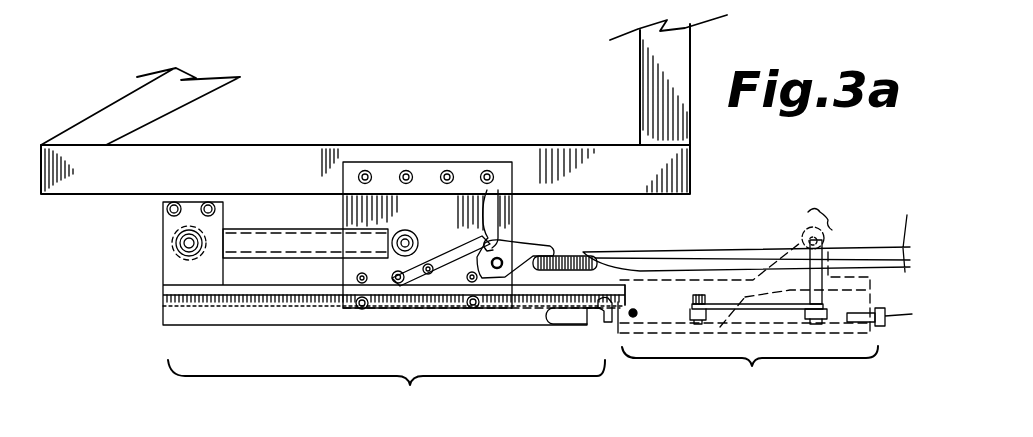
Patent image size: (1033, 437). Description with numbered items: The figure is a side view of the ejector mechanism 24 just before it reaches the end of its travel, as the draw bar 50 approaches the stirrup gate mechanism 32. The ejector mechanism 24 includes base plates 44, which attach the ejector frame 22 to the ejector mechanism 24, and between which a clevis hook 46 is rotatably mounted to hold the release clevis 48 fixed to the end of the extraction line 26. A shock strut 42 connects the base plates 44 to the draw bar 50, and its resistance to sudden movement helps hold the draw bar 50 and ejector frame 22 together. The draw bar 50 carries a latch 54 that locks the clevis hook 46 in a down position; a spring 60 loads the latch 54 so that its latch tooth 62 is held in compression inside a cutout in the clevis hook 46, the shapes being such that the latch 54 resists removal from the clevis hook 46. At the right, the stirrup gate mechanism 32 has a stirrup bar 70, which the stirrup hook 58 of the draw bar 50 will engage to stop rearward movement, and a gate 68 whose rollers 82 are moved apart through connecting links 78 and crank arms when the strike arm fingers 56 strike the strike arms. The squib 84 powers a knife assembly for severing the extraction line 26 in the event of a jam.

The ejector frame 22 is at (690, 158).
The ejector mechanism 24 is at (386, 387).
The extraction line 26 is at (848, 248).
The stirrup gate mechanism 32 is at (748, 321).
The shock strut 42 is at (307, 228).
The base plates 44 is at (512, 199).
The clevis hook 46 is at (524, 243).
The release clevis 48 is at (575, 255).
The draw bar 50 is at (230, 325).
The latch 54 is at (432, 258).
The strike arm fingers 56 is at (612, 322).
The stirrup hook 58 is at (587, 324).
The spring 60 is at (398, 271).
The latch tooth 62 is at (490, 200).
The gate 68 is at (830, 211).
The stirrup bar 70 is at (640, 313).
The connecting links 78 is at (760, 310).
The rollers 82 is at (800, 232).
The squib 84 is at (880, 326).